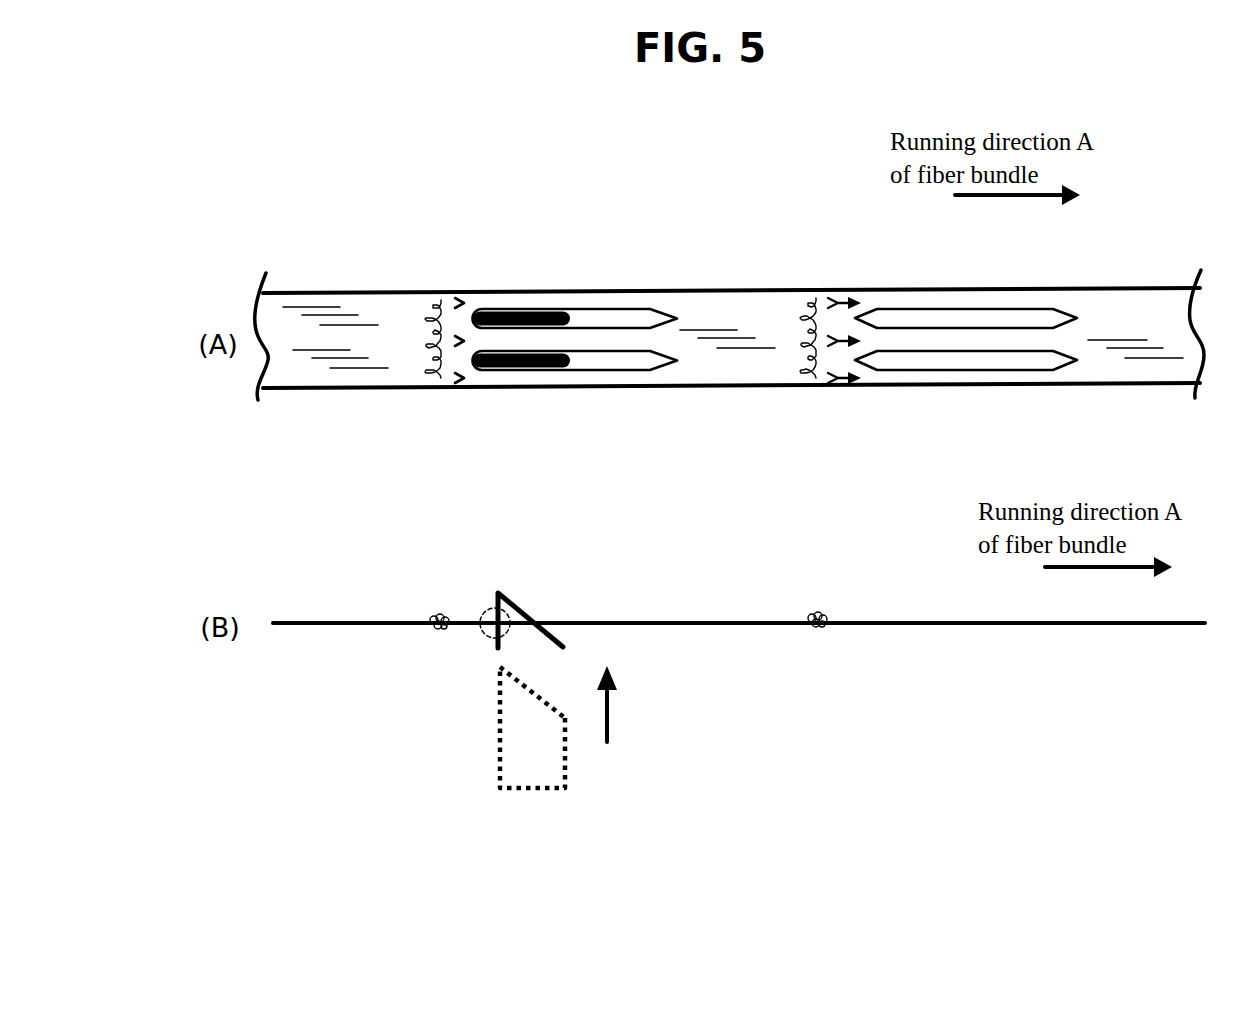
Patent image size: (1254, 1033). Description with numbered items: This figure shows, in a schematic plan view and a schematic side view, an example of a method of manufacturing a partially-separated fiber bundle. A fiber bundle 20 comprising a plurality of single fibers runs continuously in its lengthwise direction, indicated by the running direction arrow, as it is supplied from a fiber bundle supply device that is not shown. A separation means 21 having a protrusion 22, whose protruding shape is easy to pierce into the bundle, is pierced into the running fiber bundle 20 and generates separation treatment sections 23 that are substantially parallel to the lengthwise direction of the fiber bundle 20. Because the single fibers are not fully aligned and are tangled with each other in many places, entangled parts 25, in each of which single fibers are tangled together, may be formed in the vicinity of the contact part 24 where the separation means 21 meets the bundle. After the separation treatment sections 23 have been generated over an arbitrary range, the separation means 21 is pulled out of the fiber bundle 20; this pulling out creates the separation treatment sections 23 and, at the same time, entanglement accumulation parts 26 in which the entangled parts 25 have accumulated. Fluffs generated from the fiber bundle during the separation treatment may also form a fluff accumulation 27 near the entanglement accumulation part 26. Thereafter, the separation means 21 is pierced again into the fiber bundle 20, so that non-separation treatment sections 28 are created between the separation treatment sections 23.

The fiber bundle 20 is at (395, 274).
The separation means 21 is at (550, 366).
The protrusion 22 is at (480, 667).
The separation treatment section 23 is at (690, 285).
The contact part 24 is at (497, 610).
The entangled part 25 is at (440, 388).
The entanglement accumulation part 26 is at (838, 384).
The fluff accumulation 27 is at (804, 372).
The non-separation treatment section 28 is at (848, 285).